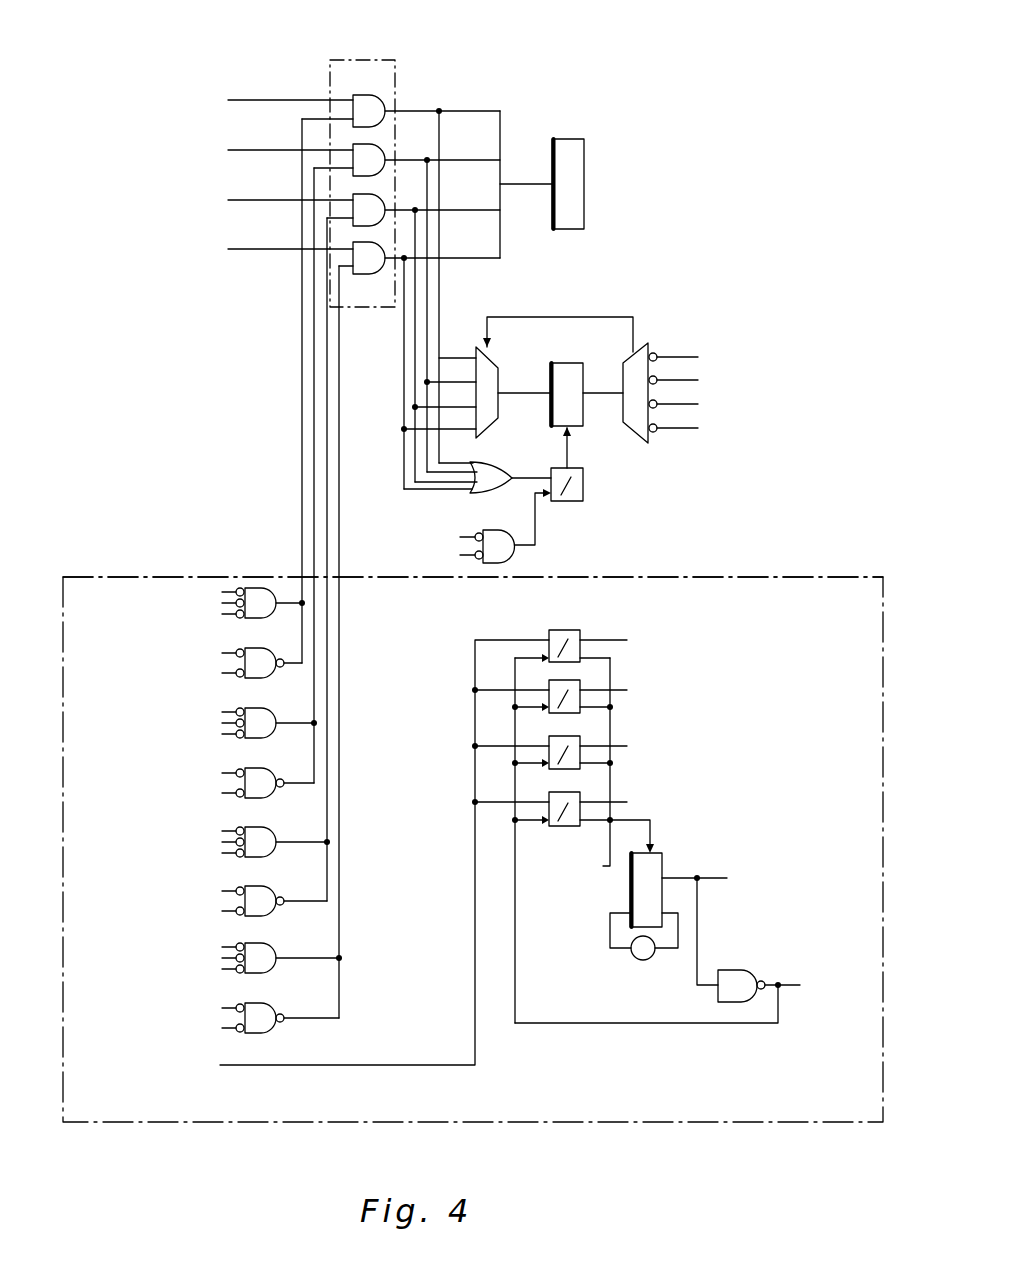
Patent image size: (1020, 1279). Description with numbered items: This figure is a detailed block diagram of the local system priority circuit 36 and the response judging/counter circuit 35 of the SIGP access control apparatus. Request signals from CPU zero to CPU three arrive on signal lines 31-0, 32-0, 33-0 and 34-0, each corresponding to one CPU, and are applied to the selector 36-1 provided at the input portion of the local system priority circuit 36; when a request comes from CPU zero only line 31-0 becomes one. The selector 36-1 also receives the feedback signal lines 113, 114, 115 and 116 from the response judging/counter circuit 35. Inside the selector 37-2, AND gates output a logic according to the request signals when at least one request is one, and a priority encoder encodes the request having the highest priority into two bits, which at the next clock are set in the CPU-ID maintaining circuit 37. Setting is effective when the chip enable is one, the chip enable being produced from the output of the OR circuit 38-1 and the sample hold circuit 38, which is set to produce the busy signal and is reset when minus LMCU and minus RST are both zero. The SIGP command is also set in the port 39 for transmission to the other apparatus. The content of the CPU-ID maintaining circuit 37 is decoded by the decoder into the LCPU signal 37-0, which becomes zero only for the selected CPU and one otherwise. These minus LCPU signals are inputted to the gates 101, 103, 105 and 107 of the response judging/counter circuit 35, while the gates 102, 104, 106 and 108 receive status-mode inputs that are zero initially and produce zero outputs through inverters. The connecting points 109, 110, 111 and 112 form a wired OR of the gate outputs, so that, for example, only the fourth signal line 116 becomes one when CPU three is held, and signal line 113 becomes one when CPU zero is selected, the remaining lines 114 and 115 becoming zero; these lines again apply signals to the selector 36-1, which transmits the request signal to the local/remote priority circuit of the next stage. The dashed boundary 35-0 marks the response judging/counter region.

The signal line 31-0 is at (224, 100).
The signal line 32-0 is at (224, 150).
The signal line 33-0 is at (224, 200).
The signal line 34-0 is at (224, 249).
The response judging/counter circuit 35 is at (876, 1118).
The input signal lines to response judging circuit 35-0 is at (300, 590).
The local system priority circuit 36 is at (600, 243).
The selector 36-1 is at (348, 62).
The CPU-ID maintaining circuit 37 is at (578, 380).
The LCPU signal 37-0 is at (794, 347).
The selector 37-2 is at (482, 345).
The sample hold circuit 38 is at (583, 492).
The OR circuit 38-1 is at (485, 466).
The port 39 is at (572, 139).
The gate 101 is at (179, 605).
The gate 102 is at (189, 664).
The gate 103 is at (179, 725).
The gate 104 is at (195, 784).
The gate 105 is at (179, 844).
The gate 106 is at (202, 902).
The gate 107 is at (179, 958).
The gate 108 is at (208, 1021).
The connecting point 109 is at (305, 604).
The connecting point 110 is at (318, 724).
The connecting point 111 is at (330, 843).
The connecting point 112 is at (342, 959).
The signal line 113 is at (302, 530).
The signal line 114 is at (314, 490).
The signal line 115 is at (327, 488).
The signal line 116 is at (339, 517).